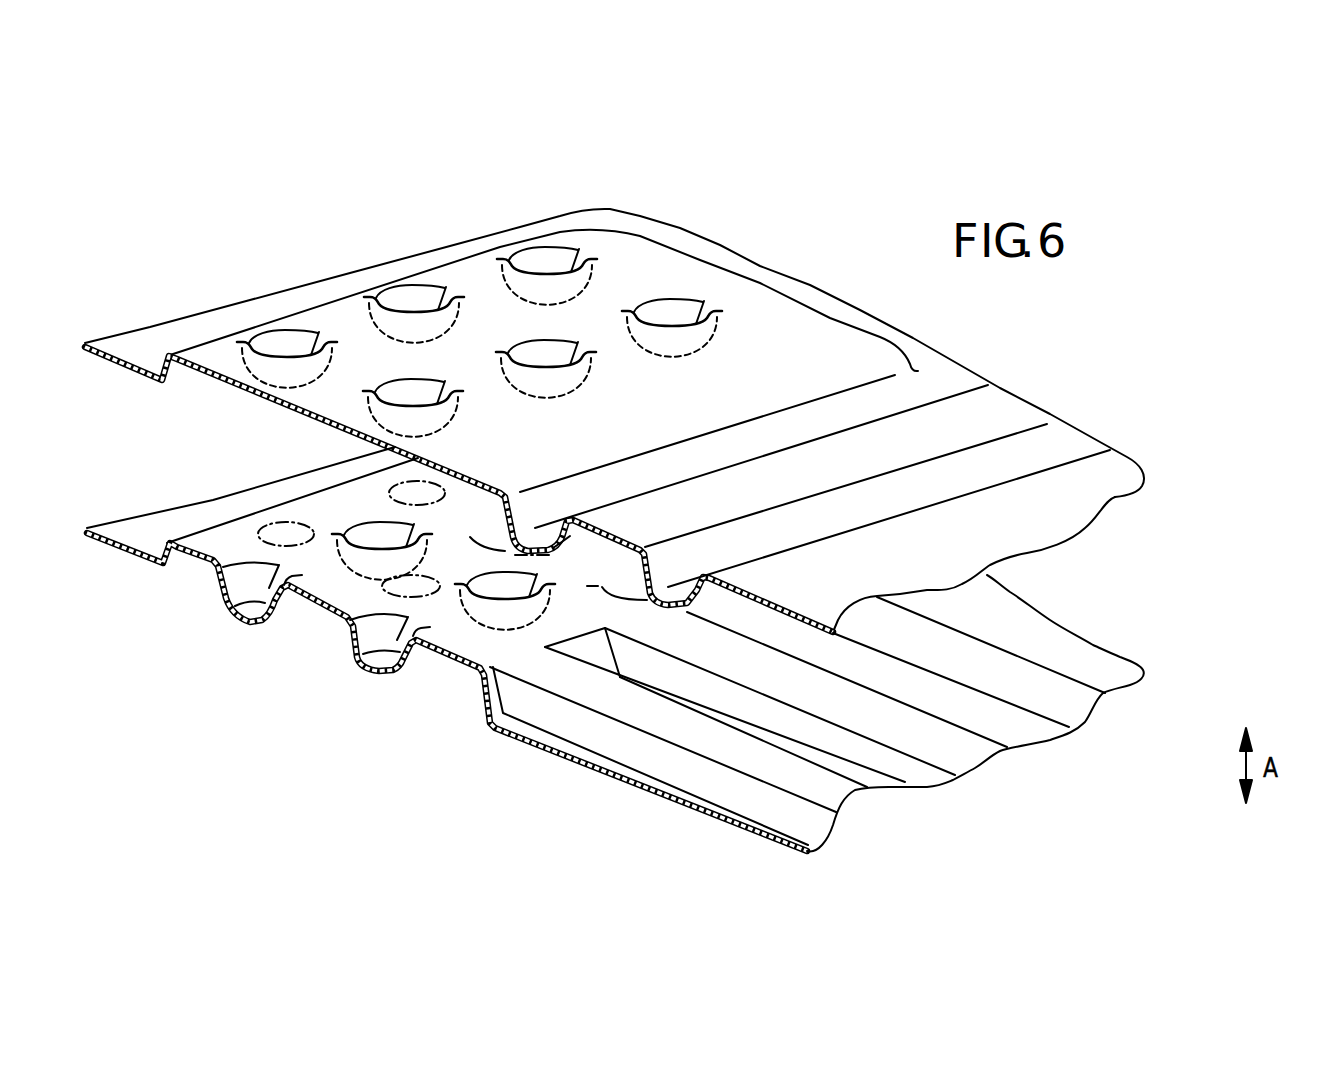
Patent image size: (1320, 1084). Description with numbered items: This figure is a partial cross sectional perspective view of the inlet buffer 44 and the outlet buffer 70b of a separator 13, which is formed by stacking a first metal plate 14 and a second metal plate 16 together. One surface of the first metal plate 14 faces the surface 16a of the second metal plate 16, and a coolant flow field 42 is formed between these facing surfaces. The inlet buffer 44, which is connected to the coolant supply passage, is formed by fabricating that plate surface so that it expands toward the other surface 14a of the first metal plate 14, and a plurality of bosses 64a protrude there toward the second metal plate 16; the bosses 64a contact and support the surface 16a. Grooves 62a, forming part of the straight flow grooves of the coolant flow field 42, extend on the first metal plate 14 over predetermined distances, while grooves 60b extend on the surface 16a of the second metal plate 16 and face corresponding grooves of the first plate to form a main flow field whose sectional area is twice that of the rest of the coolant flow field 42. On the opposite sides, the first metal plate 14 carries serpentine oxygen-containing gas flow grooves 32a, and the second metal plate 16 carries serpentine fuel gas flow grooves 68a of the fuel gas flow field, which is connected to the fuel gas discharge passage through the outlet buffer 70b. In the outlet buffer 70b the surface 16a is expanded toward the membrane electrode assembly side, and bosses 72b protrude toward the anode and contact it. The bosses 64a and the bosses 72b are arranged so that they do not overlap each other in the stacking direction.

The separator 13 is at (1191, 301).
The first metal plate 14 is at (1093, 488).
The surface of the first metal plate 14a is at (701, 500).
The second metal plate 16 is at (1113, 663).
The surface of the second metal plate 16a is at (760, 677).
The oxygen-containing gas flow grooves 32a is at (1060, 447).
The coolant flow field 42 is at (789, 637).
The inlet buffer 44 is at (647, 264).
The grooves 60b is at (941, 693).
The grooves 62a is at (992, 575).
The bosses 64a is at (250, 392).
The fuel gas flow grooves 68a is at (852, 800).
The outlet buffer 70b is at (229, 531).
The bosses 72b is at (253, 623).